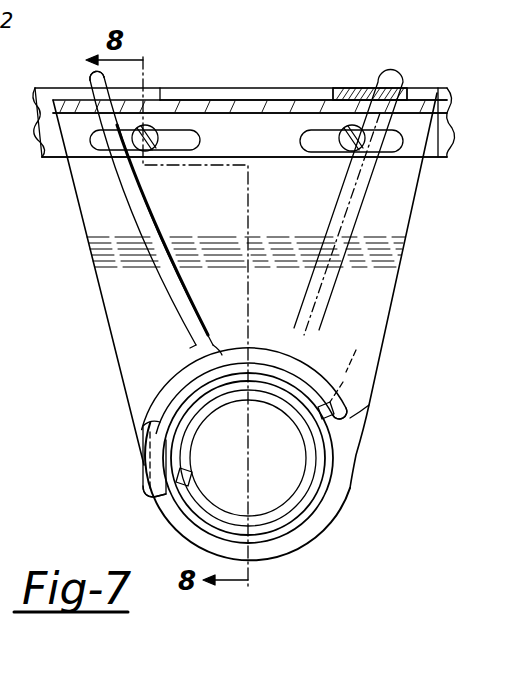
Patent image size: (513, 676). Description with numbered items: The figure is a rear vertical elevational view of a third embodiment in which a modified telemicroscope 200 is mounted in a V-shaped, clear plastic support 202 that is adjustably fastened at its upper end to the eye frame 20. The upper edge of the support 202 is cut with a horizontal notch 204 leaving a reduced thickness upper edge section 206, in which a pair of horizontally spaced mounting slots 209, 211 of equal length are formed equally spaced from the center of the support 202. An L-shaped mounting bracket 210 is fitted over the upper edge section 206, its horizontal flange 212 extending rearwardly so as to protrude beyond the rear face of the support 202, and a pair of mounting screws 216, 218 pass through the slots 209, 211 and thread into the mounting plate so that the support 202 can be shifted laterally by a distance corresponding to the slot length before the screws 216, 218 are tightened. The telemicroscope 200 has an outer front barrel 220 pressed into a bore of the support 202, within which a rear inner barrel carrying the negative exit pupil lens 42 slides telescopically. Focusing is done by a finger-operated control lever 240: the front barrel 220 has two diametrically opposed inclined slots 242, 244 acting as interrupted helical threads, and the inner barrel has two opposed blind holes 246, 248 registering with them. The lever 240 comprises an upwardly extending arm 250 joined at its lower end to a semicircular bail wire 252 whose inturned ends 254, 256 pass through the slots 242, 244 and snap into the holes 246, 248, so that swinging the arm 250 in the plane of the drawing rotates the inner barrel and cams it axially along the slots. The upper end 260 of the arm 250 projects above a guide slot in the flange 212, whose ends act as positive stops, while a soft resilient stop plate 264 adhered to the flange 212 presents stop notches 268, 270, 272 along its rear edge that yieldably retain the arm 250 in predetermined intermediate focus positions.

The eye frame 20 is at (60, 152).
The negative exit pupil lens 42 is at (300, 465).
The telemicroscope 200 is at (180, 522).
The support 202 is at (90, 278).
The horizontal notch 204 is at (276, 158).
The upper edge section 206 is at (55, 160).
The mounting slot 209 is at (190, 138).
The mounting bracket 210 is at (413, 90).
The mounting slot 211 is at (303, 138).
The horizontal flange 212 is at (424, 94).
The mounting screw 216 is at (163, 124).
The mounting screw 218 is at (356, 125).
The front barrel 220 is at (155, 432).
The control lever 240 is at (125, 200).
The slot 242 is at (325, 485).
The slot 244 is at (150, 462).
The blind hole 246 is at (338, 368).
The blind hole 248 is at (180, 467).
The arm 250 is at (322, 210).
The bail wire 252 is at (186, 368).
The inturned end 254 is at (366, 410).
The inturned end 256 is at (158, 498).
The upper end 260 is at (91, 77).
The stop plate 264 is at (303, 72).
The stop notch 268 is at (160, 98).
The stop notch 270 is at (251, 92).
The stop notch 272 is at (338, 92).